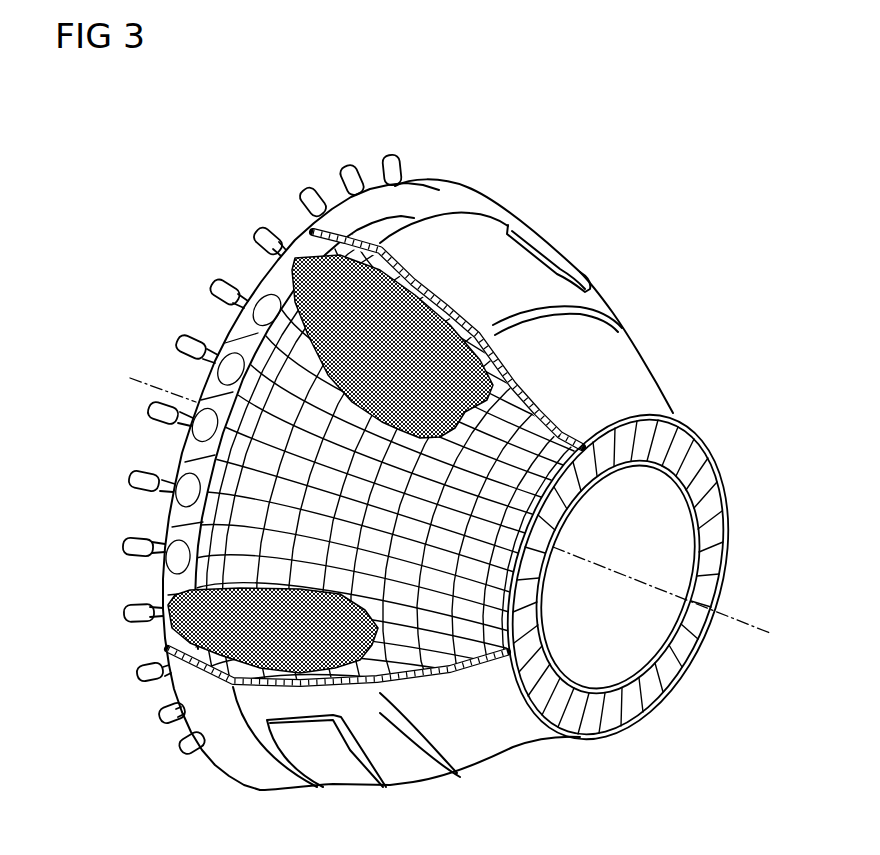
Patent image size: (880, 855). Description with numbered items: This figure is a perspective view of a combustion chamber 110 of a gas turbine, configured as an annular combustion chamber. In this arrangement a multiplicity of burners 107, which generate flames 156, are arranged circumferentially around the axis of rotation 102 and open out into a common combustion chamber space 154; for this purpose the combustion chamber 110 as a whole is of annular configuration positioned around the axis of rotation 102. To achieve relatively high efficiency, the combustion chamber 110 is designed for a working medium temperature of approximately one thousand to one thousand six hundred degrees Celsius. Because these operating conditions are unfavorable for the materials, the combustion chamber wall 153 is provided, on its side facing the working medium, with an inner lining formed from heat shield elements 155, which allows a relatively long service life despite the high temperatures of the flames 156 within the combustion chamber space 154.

The axis of rotation 102 is at (753, 636).
The burners 107 is at (262, 242).
The combustion chamber 110 is at (510, 275).
The combustion chamber wall 153 is at (333, 213).
The combustion chamber space 154 is at (383, 247).
The heat shield elements 155 is at (253, 470).
The flames 156 is at (393, 327).